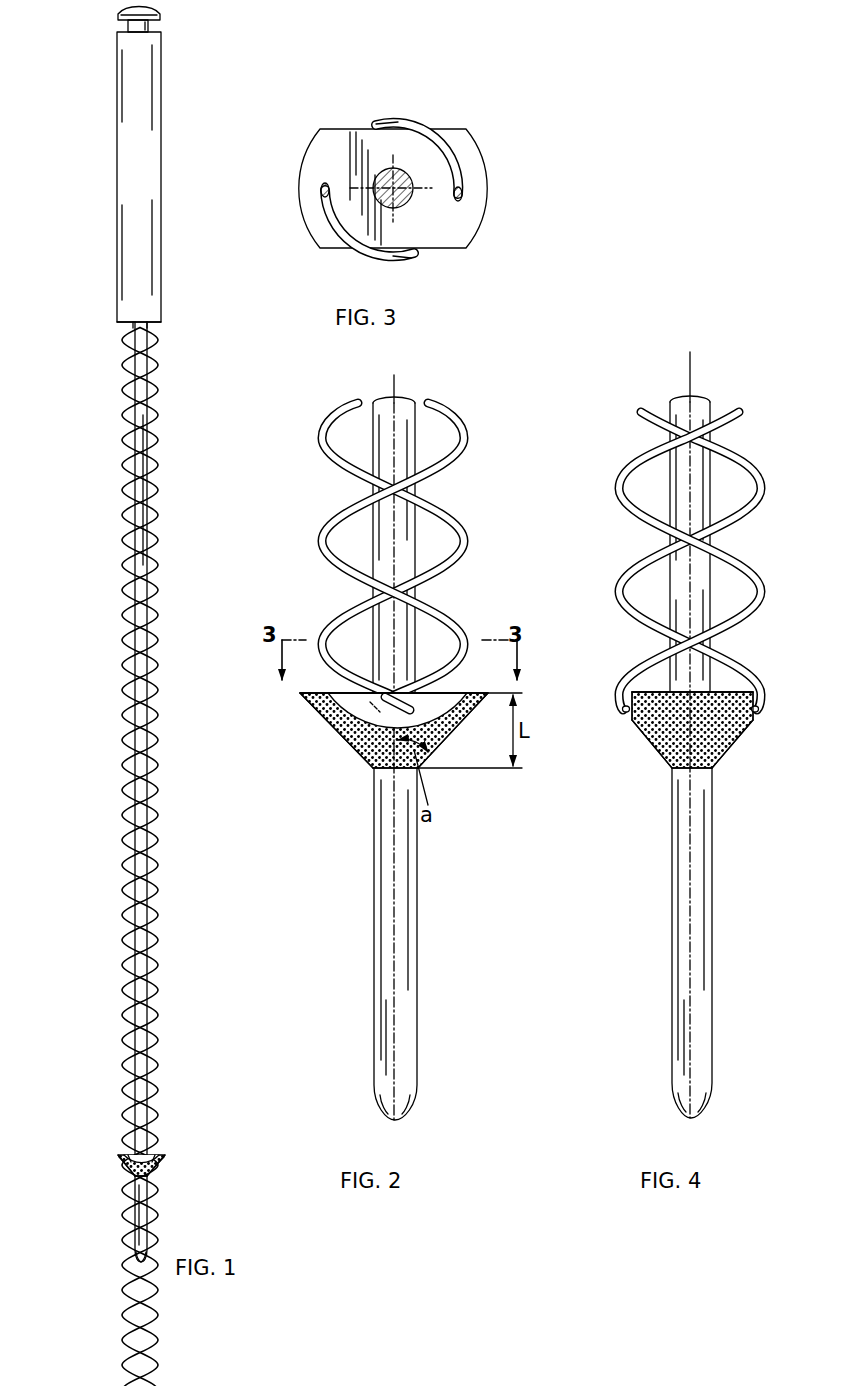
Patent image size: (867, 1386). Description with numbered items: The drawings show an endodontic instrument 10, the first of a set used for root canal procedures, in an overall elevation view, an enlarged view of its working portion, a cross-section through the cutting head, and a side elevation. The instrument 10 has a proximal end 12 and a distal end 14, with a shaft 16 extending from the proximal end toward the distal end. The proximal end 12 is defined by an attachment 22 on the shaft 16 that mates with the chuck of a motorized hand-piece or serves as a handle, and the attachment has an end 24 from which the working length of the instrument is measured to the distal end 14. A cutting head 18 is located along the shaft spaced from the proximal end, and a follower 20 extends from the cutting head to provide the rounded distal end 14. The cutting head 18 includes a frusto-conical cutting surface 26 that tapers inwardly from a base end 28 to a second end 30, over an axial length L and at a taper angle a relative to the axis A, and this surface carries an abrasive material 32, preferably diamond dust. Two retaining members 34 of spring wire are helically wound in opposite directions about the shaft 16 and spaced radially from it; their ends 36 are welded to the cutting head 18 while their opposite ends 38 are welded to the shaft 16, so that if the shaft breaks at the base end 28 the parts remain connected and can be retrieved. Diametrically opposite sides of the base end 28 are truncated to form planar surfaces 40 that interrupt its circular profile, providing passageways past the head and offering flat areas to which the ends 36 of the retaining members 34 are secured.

In FIG. 1, the endodontic instrument 10 is at (70, 478).
In FIG. 1, the proximal end 12 is at (110, 20).
In FIG. 1, the distal end 14 is at (130, 1257).
In FIG. 2, the distal end 14 is at (422, 1114).
In FIG. 4, the distal end 14 is at (717, 1112).
In FIG. 1, the shaft 16 is at (130, 713).
In FIG. 3, the shaft 16 is at (383, 172).
In FIG. 2, the shaft 16 is at (383, 447).
In FIG. 4, the shaft 16 is at (705, 411).
In FIG. 1, the cutting head 18 is at (147, 1157).
In FIG. 3, the cutting head 18 is at (494, 176).
In FIG. 2, the cutting head 18 is at (386, 709).
In FIG. 4, the cutting head 18 is at (690, 738).
In FIG. 1, the follower 20 is at (148, 1218).
In FIG. 2, the follower 20 is at (408, 958).
In FIG. 4, the follower 20 is at (698, 911).
In FIG. 1, the attachment 22 is at (115, 148).
In FIG. 1, the end of attachment 24 is at (118, 324).
In FIG. 1, the frusto-conical cutting surface 26 is at (128, 1165).
In FIG. 2, the frusto-conical cutting surface 26 is at (456, 730).
In FIG. 4, the frusto-conical cutting surface 26 is at (648, 745).
In FIG. 1, the base end 28 is at (135, 1162).
In FIG. 3, the base end 28 is at (470, 223).
In FIG. 2, the base end 28 is at (335, 700).
In FIG. 4, the base end 28 is at (722, 690).
In FIG. 1, the second end 30 is at (140, 1176).
In FIG. 2, the second end 30 is at (378, 778).
In FIG. 4, the second end 30 is at (680, 775).
In FIG. 2, the abrasive material 32 is at (350, 735).
In FIG. 4, the abrasive material 32 is at (720, 735).
In FIG. 1, the retaining members 34 is at (126, 569).
In FIG. 3, the retaining members 34 is at (398, 175).
In FIG. 2, the retaining members 34 is at (322, 434).
In FIG. 4, the retaining members 34 is at (742, 556).
In FIG. 1, the ends of retaining members 36 is at (135, 1155).
In FIG. 3, the ends of retaining members 36 is at (388, 121).
In FIG. 2, the ends of retaining members 36 is at (420, 706).
In FIG. 4, the ends of retaining members 36 is at (622, 700).
In FIG. 1, the ends of retaining members 38 is at (131, 324).
In FIG. 1, the planar surfaces 40 is at (152, 1161).
In FIG. 3, the planar surfaces 40 is at (446, 128).
In FIG. 2, the planar surfaces 40 is at (345, 708).
In FIG. 4, the planar surfaces 40 is at (632, 718).